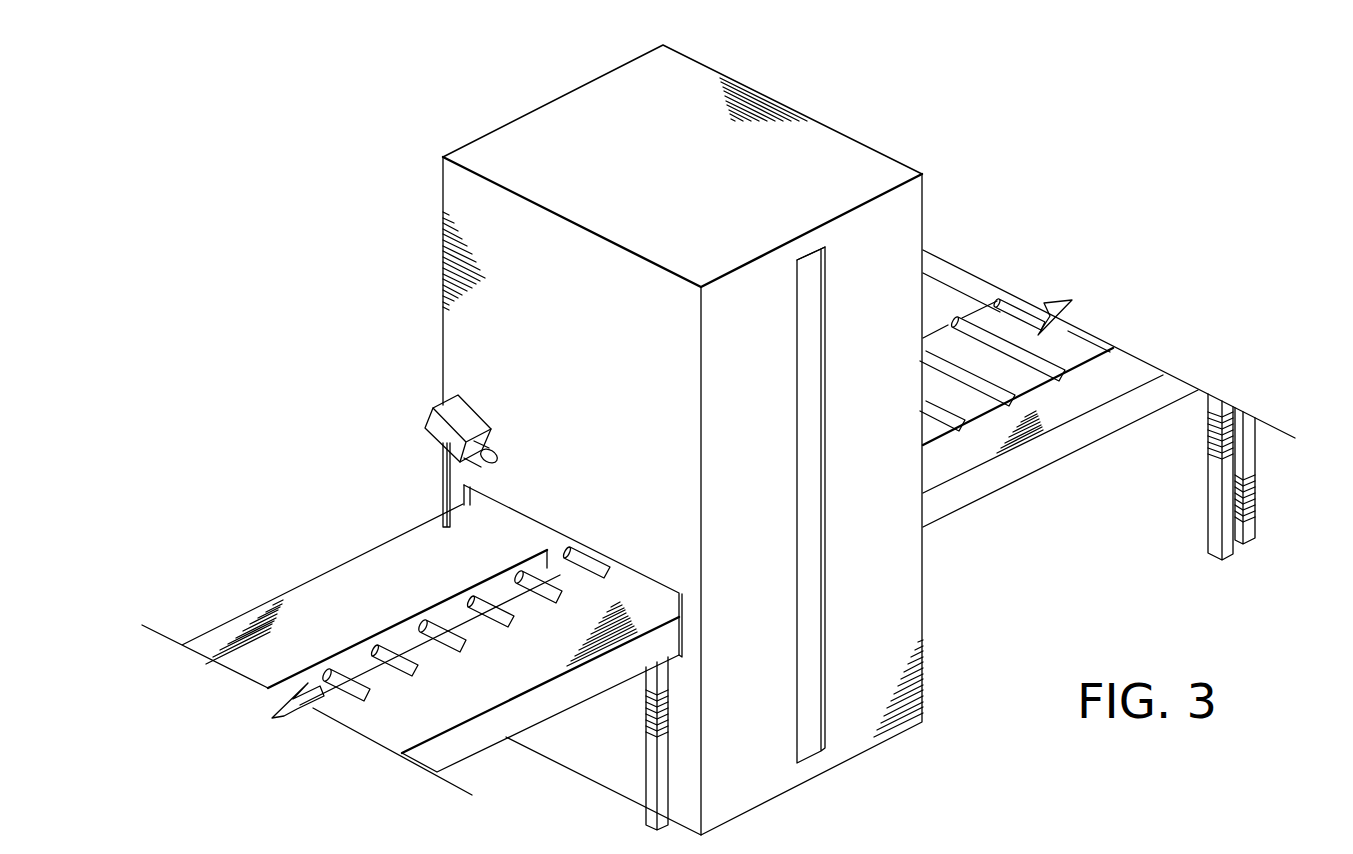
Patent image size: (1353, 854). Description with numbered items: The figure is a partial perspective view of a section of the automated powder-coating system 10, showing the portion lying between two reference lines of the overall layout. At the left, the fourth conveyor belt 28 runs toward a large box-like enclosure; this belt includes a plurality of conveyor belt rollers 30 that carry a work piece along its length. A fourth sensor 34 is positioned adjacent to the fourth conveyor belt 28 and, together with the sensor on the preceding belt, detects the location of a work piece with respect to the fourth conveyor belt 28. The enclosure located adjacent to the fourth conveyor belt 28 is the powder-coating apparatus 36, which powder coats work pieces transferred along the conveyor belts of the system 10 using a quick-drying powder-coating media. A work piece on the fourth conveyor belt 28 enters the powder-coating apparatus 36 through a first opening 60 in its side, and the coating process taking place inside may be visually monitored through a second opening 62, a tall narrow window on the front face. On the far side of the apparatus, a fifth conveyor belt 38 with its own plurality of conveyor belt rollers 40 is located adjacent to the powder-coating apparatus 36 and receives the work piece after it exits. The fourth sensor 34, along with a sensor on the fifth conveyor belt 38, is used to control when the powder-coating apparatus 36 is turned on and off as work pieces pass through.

The automated powder-coating system 10 is at (226, 120).
The fourth conveyor belt 28 is at (363, 565).
The conveyor belt rollers 30 is at (448, 614).
The fourth sensor 34 is at (441, 404).
The powder-coating apparatus 36 is at (530, 123).
The fifth conveyor belt 38 is at (1086, 400).
The conveyor belt rollers 40 is at (972, 317).
The first opening 60 is at (663, 593).
The second opening 62 is at (828, 530).